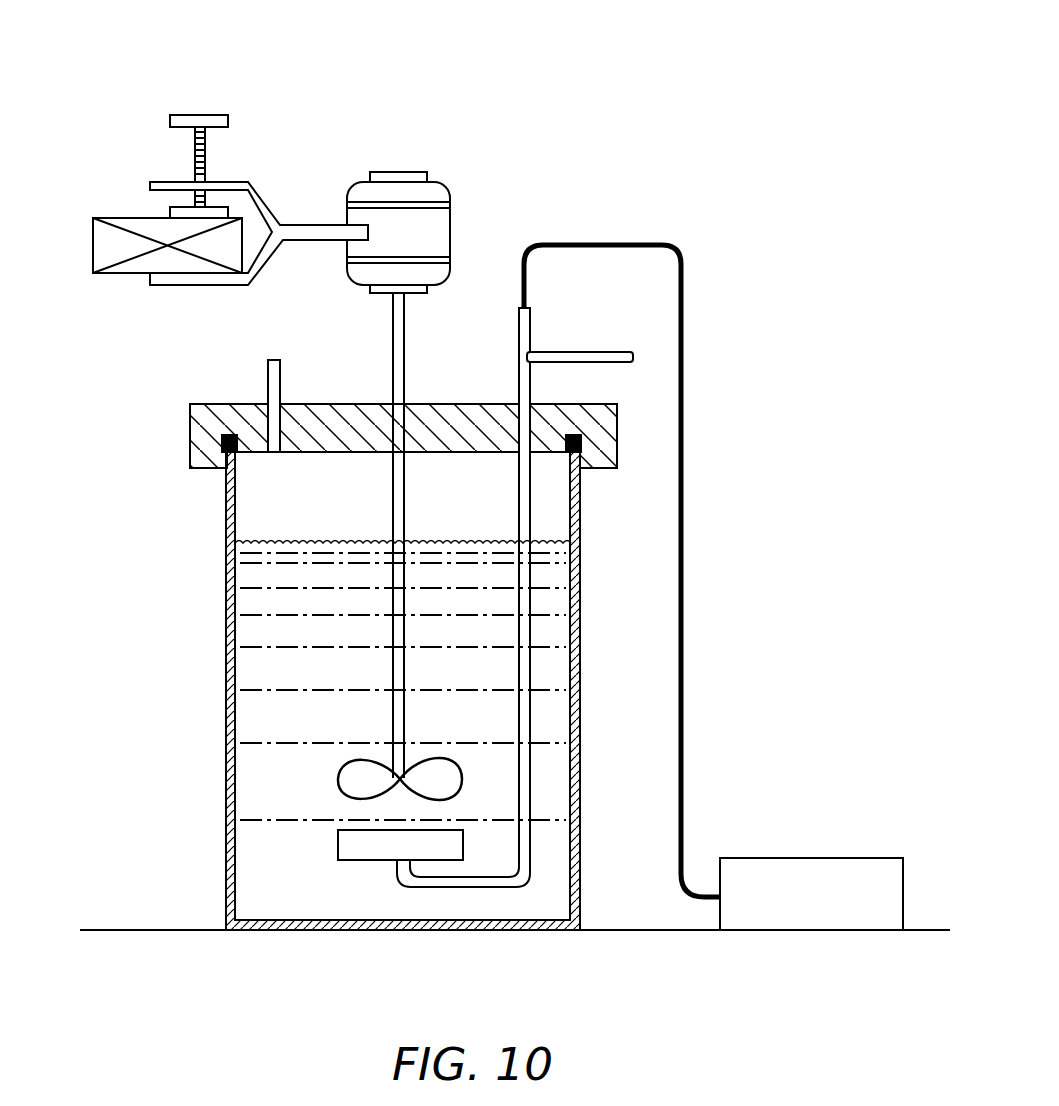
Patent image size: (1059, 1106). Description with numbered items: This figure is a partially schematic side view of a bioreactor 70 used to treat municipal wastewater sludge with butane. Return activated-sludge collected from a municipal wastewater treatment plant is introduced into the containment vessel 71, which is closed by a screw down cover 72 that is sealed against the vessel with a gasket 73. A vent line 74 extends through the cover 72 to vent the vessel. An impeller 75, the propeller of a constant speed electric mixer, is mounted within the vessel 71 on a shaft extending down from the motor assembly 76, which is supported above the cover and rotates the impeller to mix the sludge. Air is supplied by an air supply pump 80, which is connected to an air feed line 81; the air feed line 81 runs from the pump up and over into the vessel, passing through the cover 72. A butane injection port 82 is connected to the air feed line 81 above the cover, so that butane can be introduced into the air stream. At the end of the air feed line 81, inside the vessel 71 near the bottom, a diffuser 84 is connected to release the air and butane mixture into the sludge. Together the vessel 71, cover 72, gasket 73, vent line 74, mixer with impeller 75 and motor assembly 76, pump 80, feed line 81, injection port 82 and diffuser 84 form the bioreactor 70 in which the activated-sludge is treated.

The bioreactor 70 is at (597, 93).
The containment vessel 71 is at (226, 633).
The screw down cover 72 is at (190, 440).
The gasket 73 is at (223, 446).
The vent line 74 is at (270, 375).
The impeller 75 is at (355, 781).
The motor assembly 76 is at (367, 192).
The air supply pump 80 is at (812, 877).
The air feed line 81 is at (683, 430).
The butane injection port 82 is at (580, 352).
The diffuser 84 is at (355, 845).